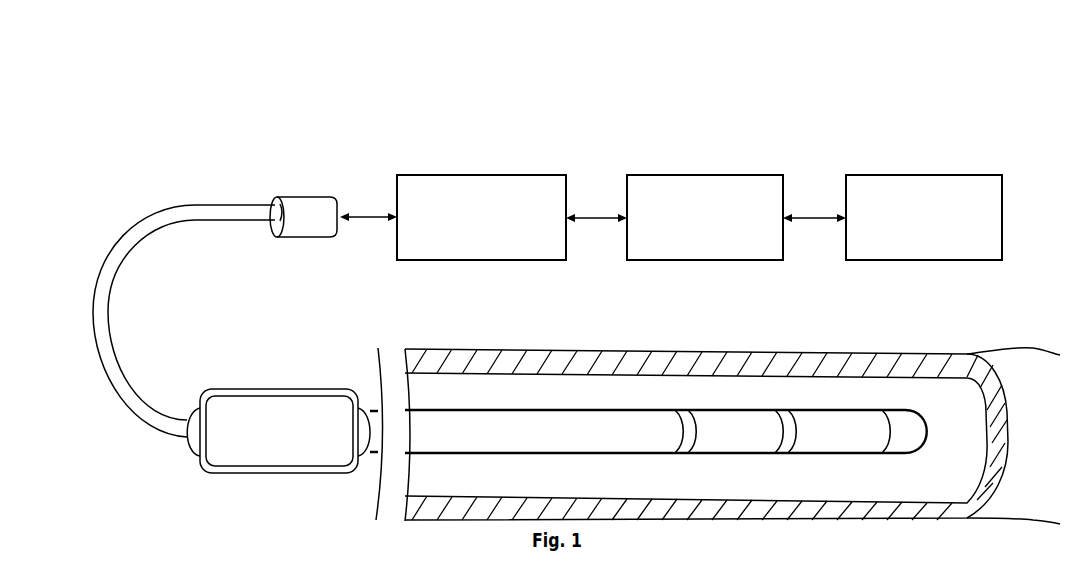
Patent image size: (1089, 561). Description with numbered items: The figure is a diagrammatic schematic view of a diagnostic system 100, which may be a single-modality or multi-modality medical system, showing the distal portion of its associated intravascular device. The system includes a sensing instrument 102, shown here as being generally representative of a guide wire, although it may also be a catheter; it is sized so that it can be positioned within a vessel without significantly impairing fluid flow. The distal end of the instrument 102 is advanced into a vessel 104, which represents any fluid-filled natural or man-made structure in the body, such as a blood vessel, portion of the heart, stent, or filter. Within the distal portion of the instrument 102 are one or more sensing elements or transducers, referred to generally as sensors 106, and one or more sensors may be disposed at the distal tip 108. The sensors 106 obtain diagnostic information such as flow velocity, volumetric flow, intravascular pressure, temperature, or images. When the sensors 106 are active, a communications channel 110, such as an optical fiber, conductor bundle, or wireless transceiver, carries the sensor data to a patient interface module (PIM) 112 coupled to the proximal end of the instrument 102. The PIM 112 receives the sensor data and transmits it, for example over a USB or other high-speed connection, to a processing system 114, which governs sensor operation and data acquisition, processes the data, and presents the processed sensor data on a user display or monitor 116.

The diagnostic system 100 is at (612, 81).
The sensing instrument 102 is at (540, 409).
The vessel 104 is at (720, 353).
The sensors 106 is at (678, 454).
The distal tip 108 is at (852, 385).
The communications channel 110 is at (215, 205).
The patient interface module (PIM) 112 is at (461, 175).
The processing system 114 is at (690, 175).
The monitor 116 is at (908, 175).